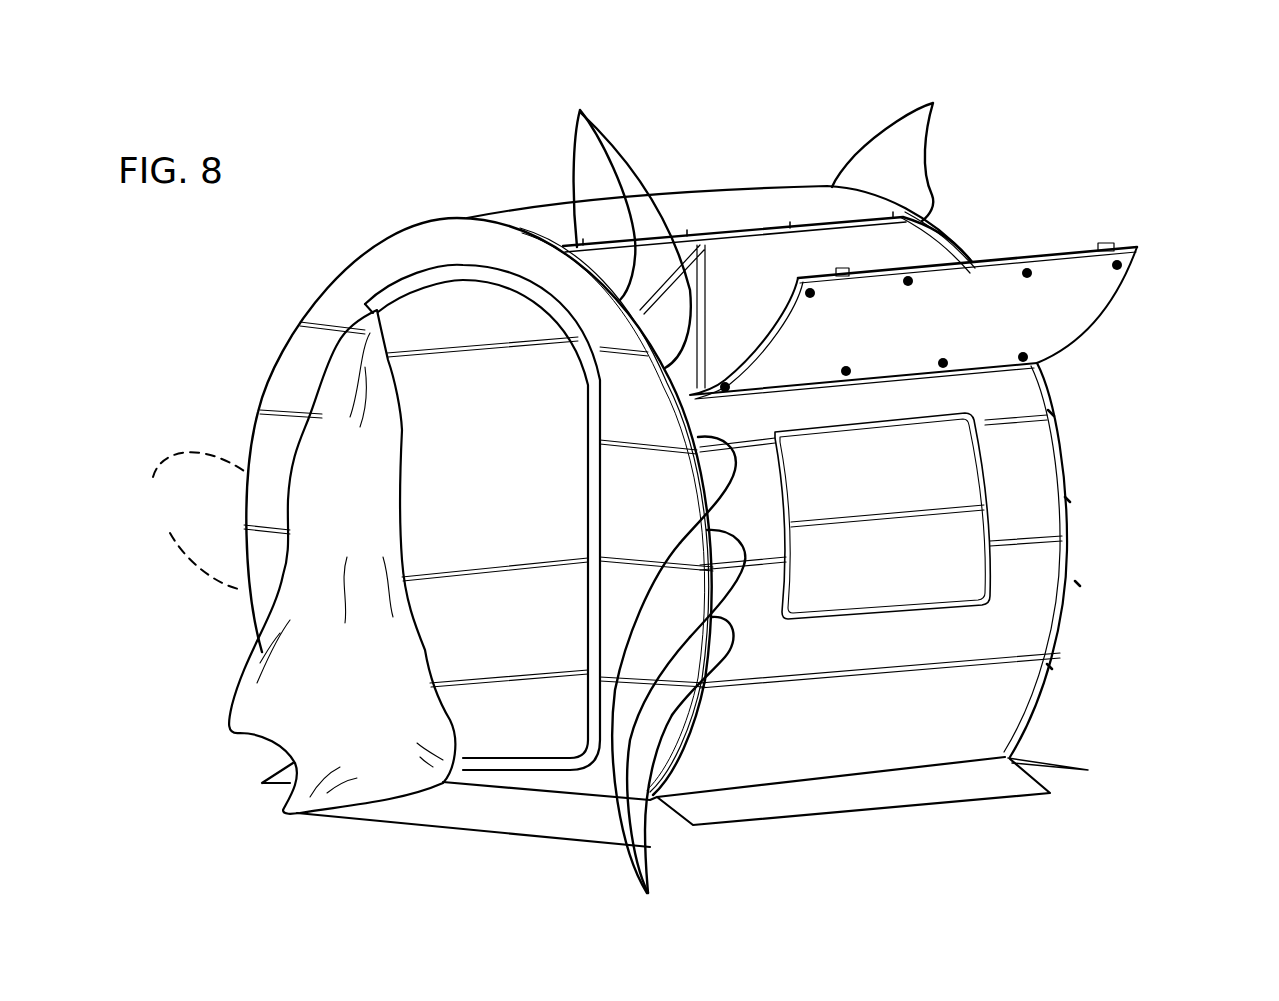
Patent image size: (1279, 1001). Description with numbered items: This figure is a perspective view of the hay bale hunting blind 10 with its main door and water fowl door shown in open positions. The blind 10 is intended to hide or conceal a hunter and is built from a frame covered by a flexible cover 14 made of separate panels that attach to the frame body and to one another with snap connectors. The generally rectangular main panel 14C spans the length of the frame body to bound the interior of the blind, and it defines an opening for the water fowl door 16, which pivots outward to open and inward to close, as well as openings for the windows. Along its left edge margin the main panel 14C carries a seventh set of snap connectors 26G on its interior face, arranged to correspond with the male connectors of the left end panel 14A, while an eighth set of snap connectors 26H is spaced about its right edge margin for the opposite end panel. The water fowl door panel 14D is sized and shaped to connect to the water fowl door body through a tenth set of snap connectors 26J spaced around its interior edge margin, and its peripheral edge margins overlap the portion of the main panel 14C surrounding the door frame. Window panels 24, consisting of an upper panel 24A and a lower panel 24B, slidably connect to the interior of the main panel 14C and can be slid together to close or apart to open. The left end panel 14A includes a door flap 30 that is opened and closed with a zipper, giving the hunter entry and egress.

The hay bale hunting blind 10 is at (1023, 135).
The cover 14 is at (371, 216).
The left end panel 14A is at (289, 362).
The main panel 14C is at (723, 753).
The water fowl door panel 14D is at (1073, 310).
The water fowl door 16 is at (1126, 245).
The window panels 24 is at (984, 510).
The upper window panel 24A is at (963, 457).
The lower window panel 24B is at (967, 573).
The seventh set of snap connectors 26G is at (580, 110).
The eighth set of snap connectors 26H is at (933, 103).
The tenth set of snap connectors 26J is at (1123, 265).
The door flap 30 is at (232, 735).